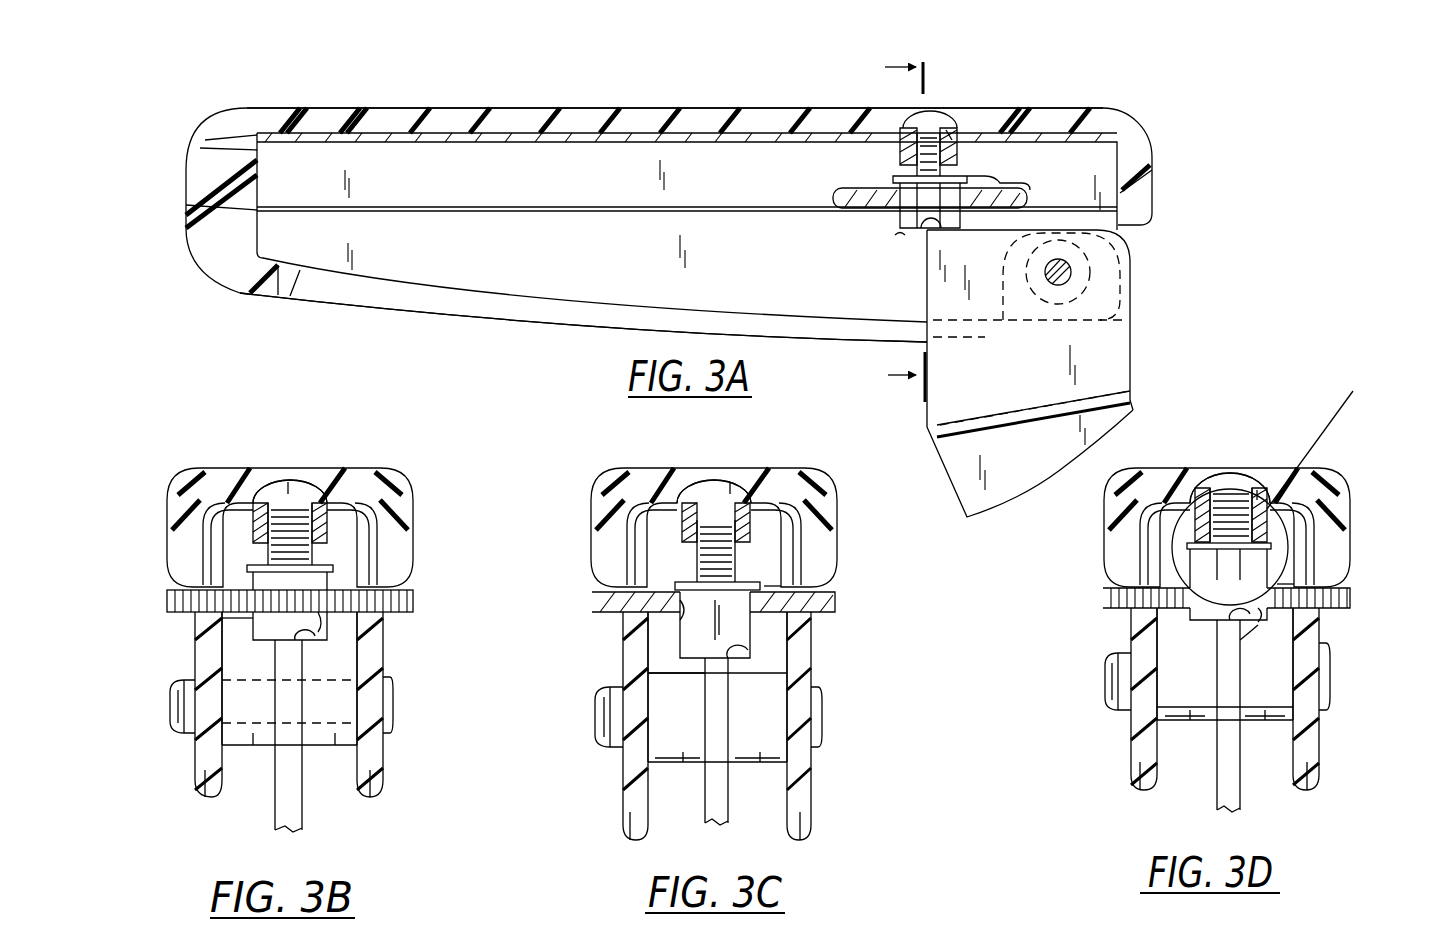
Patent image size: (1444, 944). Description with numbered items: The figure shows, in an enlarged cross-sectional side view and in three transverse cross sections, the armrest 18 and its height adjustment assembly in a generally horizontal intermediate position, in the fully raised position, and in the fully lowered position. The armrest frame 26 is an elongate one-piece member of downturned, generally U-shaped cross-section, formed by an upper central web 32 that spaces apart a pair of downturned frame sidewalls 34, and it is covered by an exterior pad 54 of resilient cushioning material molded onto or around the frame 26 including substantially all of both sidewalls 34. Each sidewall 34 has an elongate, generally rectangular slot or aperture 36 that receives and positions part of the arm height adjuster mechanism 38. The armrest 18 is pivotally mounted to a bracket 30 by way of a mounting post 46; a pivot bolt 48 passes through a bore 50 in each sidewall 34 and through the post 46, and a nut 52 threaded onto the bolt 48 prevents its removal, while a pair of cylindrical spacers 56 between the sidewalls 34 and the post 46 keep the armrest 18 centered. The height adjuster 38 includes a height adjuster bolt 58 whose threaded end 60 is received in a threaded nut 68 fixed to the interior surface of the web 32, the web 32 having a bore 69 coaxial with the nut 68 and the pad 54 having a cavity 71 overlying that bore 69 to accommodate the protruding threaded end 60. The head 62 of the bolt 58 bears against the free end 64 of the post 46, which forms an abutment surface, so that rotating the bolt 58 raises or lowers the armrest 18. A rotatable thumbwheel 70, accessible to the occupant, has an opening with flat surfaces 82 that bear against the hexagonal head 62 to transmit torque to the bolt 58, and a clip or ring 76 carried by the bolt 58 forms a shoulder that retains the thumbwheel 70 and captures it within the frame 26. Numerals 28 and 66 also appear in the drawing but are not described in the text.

In FIG. 3A, the armrest 18 is at (214, 83).
In FIG. 3A, the armrest frame 26 is at (363, 131).
In FIG. 3B, the armrest frame 26 is at (367, 500).
In FIG. 3C, the armrest frame 26 is at (770, 501).
In FIG. 3D, the armrest frame 26 is at (1227, 547).
In FIG. 3A, the fastener 28 is at (1075, 272).
In FIG. 3B, the fastener 28 is at (165, 713).
In FIG. 3C, the fastener 28 is at (592, 721).
In FIG. 3D, the fastener 28 is at (1100, 687).
In FIG. 3A, the bracket 30 is at (1142, 337).
In FIG. 3B, the bracket 30 is at (260, 831).
In FIG. 3C, the bracket 30 is at (720, 825).
In FIG. 3D, the bracket 30 is at (1212, 803).
In FIG. 3A, the upper central web 32 is at (452, 131).
In FIG. 3B, the upper central web 32 is at (350, 491).
In FIG. 3C, the upper central web 32 is at (633, 470).
In FIG. 3D, the upper central web 32 is at (1311, 477).
In FIG. 3A, the frame sidewalls 34 is at (350, 257).
In FIG. 3B, the frame sidewalls 34 is at (205, 762).
In FIG. 3C, the frame sidewalls 34 is at (630, 767).
In FIG. 3D, the frame sidewalls 34 is at (1140, 739).
In FIG. 3B, the slot or aperture 36 is at (392, 581).
In FIG. 3C, the slot or aperture 36 is at (822, 586).
In FIG. 3D, the slot or aperture 36 is at (1327, 581).
In FIG. 3A, the arm height adjuster mechanism 38 is at (893, 238).
In FIG. 3B, the arm height adjuster mechanism 38 is at (255, 650).
In FIG. 3C, the arm height adjuster mechanism 38 is at (672, 661).
In FIG. 3D, the arm height adjuster mechanism 38 is at (1258, 622).
In FIG. 3A, the mounting post 46 is at (1077, 368).
In FIG. 3B, the mounting post 46 is at (303, 823).
In FIG. 3C, the mounting post 46 is at (705, 808).
In FIG. 3D, the mounting post 46 is at (1240, 806).
In FIG. 3A, the pivot bolt 48 is at (1073, 263).
In FIG. 3B, the pivot bolt 48 is at (394, 700).
In FIG. 3C, the pivot bolt 48 is at (824, 725).
In FIG. 3D, the pivot bolt 48 is at (1327, 688).
In FIG. 3A, the bore 50 is at (1063, 286).
In FIG. 3B, the nut 52 is at (180, 731).
In FIG. 3C, the nut 52 is at (615, 745).
In FIG. 3D, the nut 52 is at (1112, 710).
In FIG. 3A, the exterior pad 54 is at (318, 106).
In FIG. 3B, the exterior pad 54 is at (372, 470).
In FIG. 3C, the exterior pad 54 is at (830, 484).
In FIG. 3D, the exterior pad 54 is at (1336, 481).
In FIG. 3A, the spacers 56 is at (1080, 283).
In FIG. 3B, the spacers 56 is at (253, 746).
In FIG. 3C, the spacers 56 is at (683, 763).
In FIG. 3D, the spacers 56 is at (1190, 721).
In FIG. 3A, the height adjuster bolt 58 is at (905, 215).
In FIG. 3B, the height adjuster bolt 58 is at (253, 625).
In FIG. 3C, the height adjuster bolt 58 is at (746, 633).
In FIG. 3D, the height adjuster bolt 58 is at (1270, 561).
In FIG. 3A, the threaded end 60 is at (929, 131).
In FIG. 3B, the threaded end 60 is at (293, 504).
In FIG. 3C, the threaded end 60 is at (736, 531).
In FIG. 3D, the threaded end 60 is at (1231, 489).
In FIG. 3A, the head 62 is at (903, 218).
In FIG. 3B, the head 62 is at (300, 632).
In FIG. 3C, the head 62 is at (690, 634).
In FIG. 3D, the head 62 is at (1200, 562).
In FIG. 3A, the free end 64 is at (930, 229).
In FIG. 3B, the free end 64 is at (320, 647).
In FIG. 3C, the free end 64 is at (730, 647).
In FIG. 3D, the free end 64 is at (1215, 623).
In FIG. 3A, the threaded insert 66 is at (897, 157).
In FIG. 3B, the threaded insert 66 is at (344, 517).
In FIG. 3C, the threaded insert 66 is at (680, 521).
In FIG. 3D, the threaded insert 66 is at (1274, 522).
In FIG. 3A, the threaded nut 68 is at (957, 150).
In FIG. 3B, the threaded nut 68 is at (335, 527).
In FIG. 3C, the threaded nut 68 is at (690, 531).
In FIG. 3D, the threaded nut 68 is at (1212, 527).
In FIG. 3A, the bore 69 is at (918, 125).
In FIG. 3B, the bore 69 is at (270, 504).
In FIG. 3C, the bore 69 is at (745, 482).
In FIG. 3D, the bore 69 is at (1222, 488).
In FIG. 3A, the thumbwheel 70 is at (833, 198).
In FIG. 3B, the thumbwheel 70 is at (167, 600).
In FIG. 3C, the thumbwheel 70 is at (836, 601).
In FIG. 3D, the thumbwheel 70 is at (1352, 598).
In FIG. 3A, the cavity 71 is at (948, 130).
In FIG. 3B, the cavity 71 is at (288, 482).
In FIG. 3C, the cavity 71 is at (731, 482).
In FIG. 3D, the cavity 71 is at (1258, 490).
In FIG. 3A, the clip or ring 76 is at (893, 178).
In FIG. 3B, the clip or ring 76 is at (237, 568).
In FIG. 3C, the clip or ring 76 is at (760, 586).
In FIG. 3D, the clip or ring 76 is at (1272, 546).
In FIG. 3B, the flat surfaces 82 is at (330, 617).
In FIG. 3C, the flat surfaces 82 is at (680, 620).
In FIG. 3D, the flat surfaces 82 is at (1267, 616).